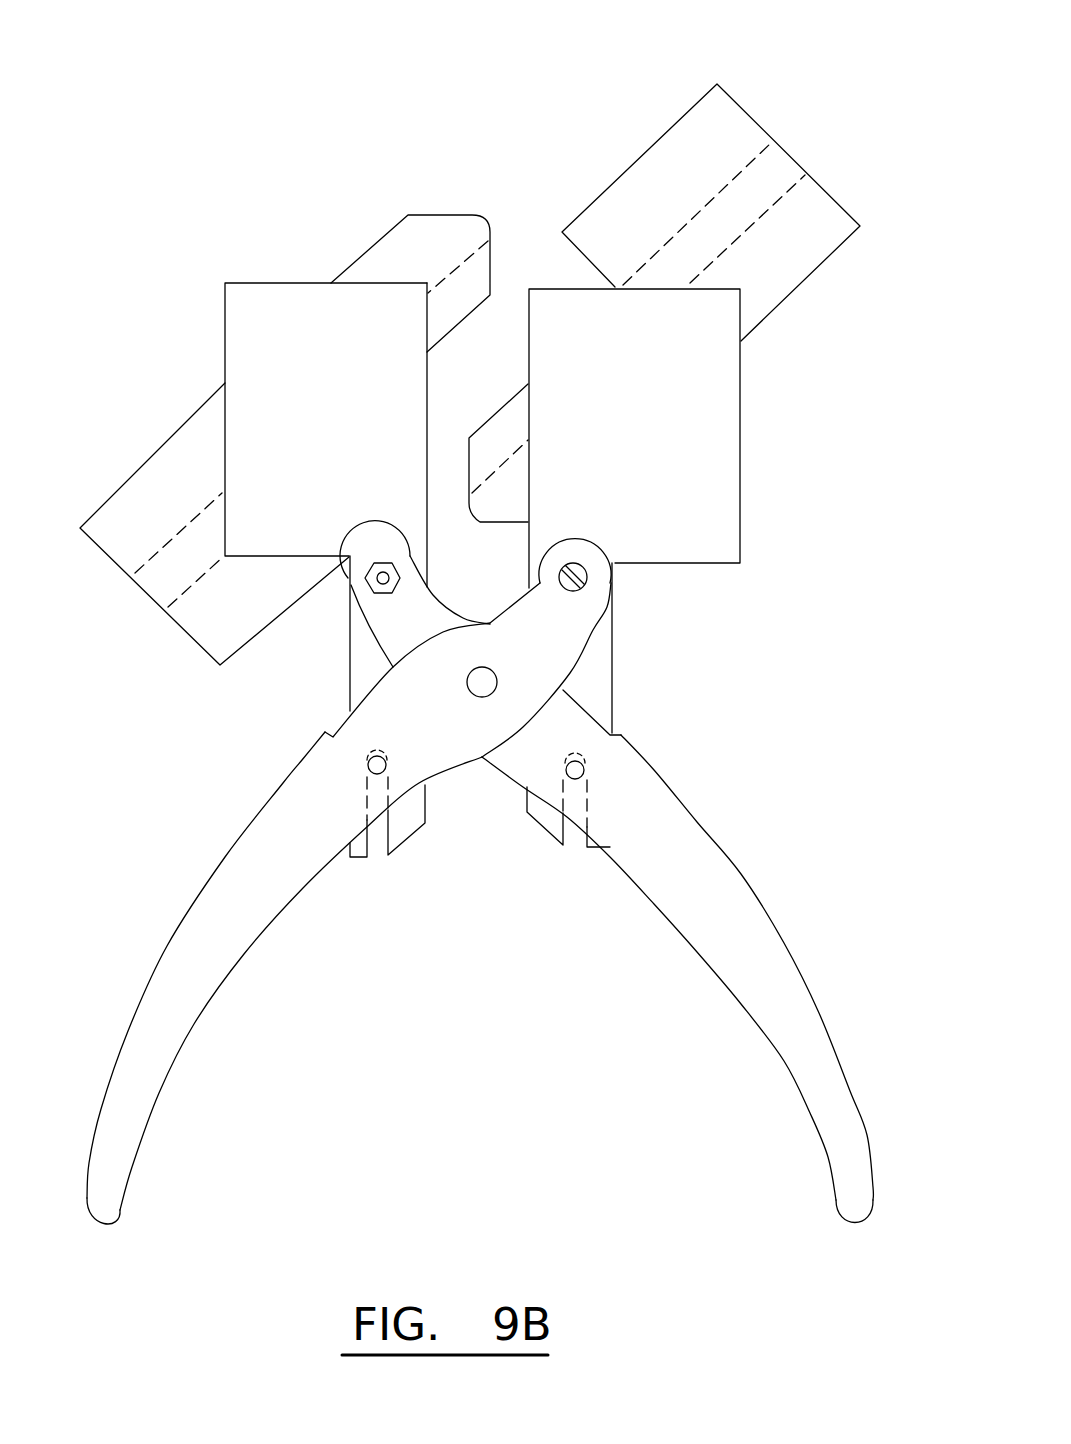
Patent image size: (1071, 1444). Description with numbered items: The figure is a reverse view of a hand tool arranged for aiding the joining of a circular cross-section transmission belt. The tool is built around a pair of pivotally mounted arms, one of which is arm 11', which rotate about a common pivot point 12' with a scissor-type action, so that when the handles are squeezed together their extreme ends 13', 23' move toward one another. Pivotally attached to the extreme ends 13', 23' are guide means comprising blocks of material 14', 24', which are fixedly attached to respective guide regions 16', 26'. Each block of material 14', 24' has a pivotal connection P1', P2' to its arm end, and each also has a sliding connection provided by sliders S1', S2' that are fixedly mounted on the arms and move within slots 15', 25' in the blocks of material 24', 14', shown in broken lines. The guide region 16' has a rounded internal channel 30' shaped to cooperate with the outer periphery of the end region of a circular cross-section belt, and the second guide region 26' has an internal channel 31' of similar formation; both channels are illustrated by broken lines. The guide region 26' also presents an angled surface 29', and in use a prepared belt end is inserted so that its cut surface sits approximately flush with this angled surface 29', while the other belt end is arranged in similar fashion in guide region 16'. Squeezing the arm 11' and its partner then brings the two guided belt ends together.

The arm 11' is at (704, 979).
The common pivot point 12' is at (477, 815).
The extreme end of arm 13' is at (314, 636).
The block of material 14' is at (306, 359).
The slot 15' is at (383, 870).
The guide region 16' is at (191, 522).
The extreme end of arm 23' is at (660, 637).
The block of material 24' is at (720, 438).
The slot 25' is at (573, 873).
The guide region 26' is at (711, 172).
The angled surface 29' is at (487, 434).
The internal channel 30' is at (441, 243).
The internal channel 31' is at (785, 184).
The pivotal connection P1' is at (344, 502).
The pivotal connection P2' is at (667, 606).
The slider S1' is at (706, 775).
The slider S2' is at (240, 789).